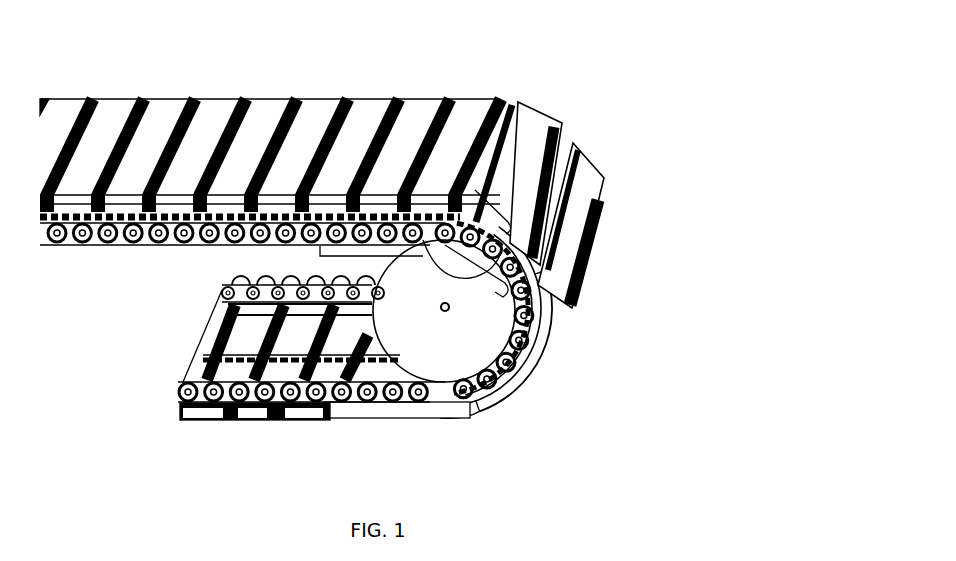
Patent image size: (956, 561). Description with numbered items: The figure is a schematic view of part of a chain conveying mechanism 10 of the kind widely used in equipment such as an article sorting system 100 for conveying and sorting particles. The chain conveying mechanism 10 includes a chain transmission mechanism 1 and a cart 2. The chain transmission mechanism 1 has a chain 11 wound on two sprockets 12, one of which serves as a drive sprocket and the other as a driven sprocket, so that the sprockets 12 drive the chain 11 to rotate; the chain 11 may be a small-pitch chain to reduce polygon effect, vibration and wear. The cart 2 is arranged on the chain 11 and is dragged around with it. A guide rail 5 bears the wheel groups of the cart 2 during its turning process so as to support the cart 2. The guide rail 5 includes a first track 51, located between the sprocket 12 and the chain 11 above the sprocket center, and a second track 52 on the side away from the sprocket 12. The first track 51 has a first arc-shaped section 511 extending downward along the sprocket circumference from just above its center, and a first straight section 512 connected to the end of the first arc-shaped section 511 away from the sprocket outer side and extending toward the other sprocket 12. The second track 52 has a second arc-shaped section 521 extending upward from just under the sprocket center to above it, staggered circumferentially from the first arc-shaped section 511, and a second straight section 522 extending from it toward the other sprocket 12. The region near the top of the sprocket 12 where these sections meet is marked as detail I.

The article sorting system 100 is at (152, 80).
The chain transmission mechanism 1 is at (262, 397).
The cart 2 is at (533, 145).
The guide rail 5 is at (342, 250).
The chain conveying mechanism 10 is at (617, 210).
The chain 11 is at (570, 285).
The sprocket 12 is at (432, 337).
The first track 51 is at (560, 333).
The first arc-shaped section 511 is at (456, 213).
The first straight section 512 is at (395, 250).
The second track 52 is at (513, 400).
The second arc-shaped section 521 is at (543, 370).
The second straight section 522 is at (383, 405).
The detail region I is at (445, 248).